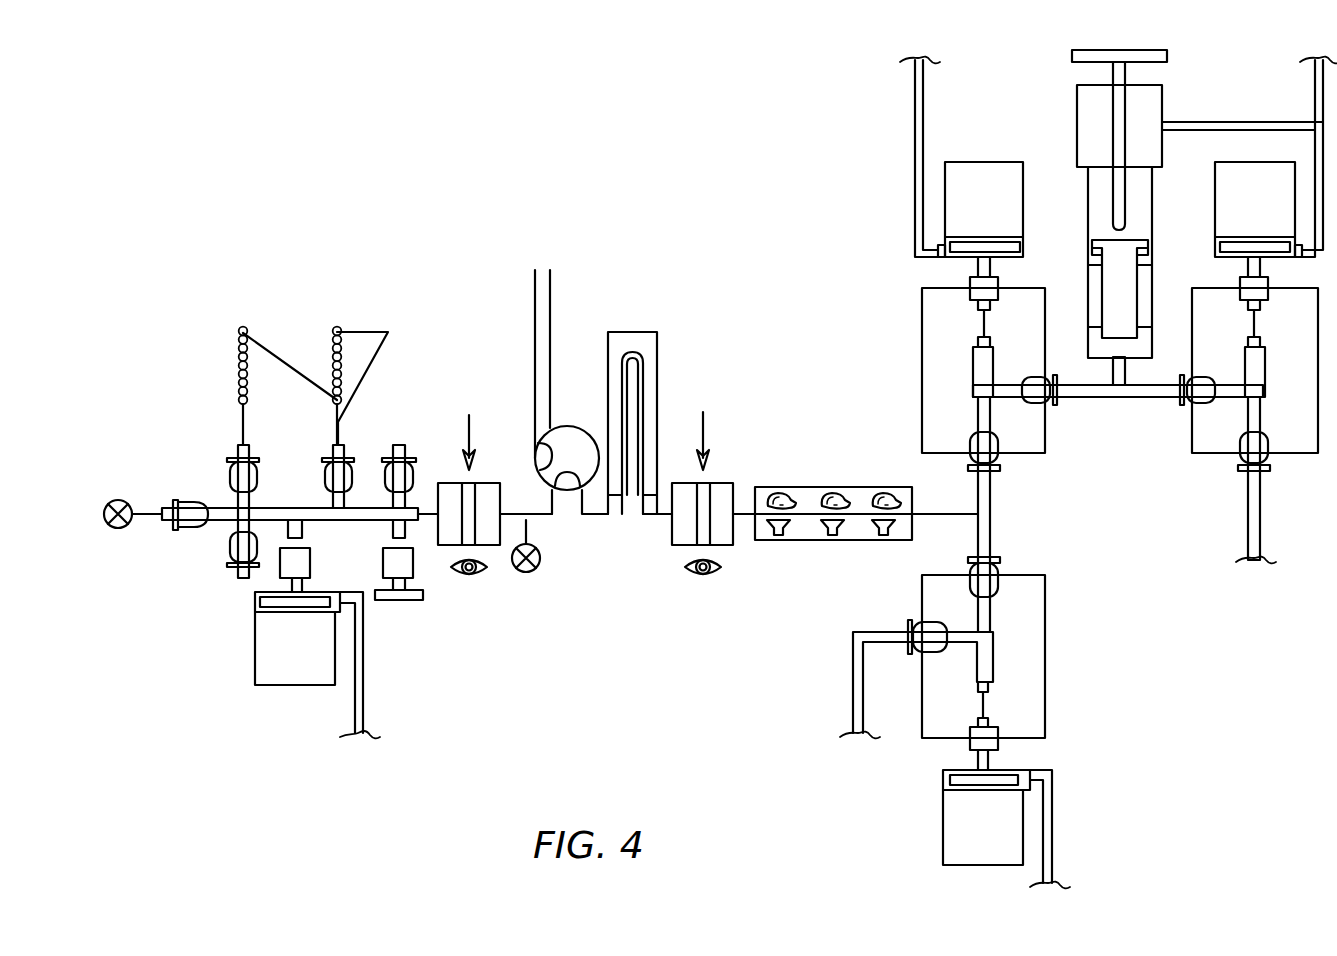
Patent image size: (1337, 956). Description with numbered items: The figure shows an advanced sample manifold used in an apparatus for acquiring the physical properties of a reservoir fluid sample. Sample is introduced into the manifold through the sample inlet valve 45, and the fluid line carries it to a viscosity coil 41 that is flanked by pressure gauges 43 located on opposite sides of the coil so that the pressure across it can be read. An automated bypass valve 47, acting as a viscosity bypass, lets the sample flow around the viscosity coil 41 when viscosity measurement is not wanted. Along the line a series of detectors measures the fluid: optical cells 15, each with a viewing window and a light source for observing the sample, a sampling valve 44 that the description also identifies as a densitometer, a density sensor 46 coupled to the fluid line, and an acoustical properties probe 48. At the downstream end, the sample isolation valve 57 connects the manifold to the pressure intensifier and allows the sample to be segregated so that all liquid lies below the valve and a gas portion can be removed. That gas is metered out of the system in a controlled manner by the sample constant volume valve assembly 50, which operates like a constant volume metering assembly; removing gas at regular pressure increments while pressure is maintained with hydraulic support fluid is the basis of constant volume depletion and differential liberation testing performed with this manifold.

The optical cell 15 is at (438, 585).
The viscosity coil 41 is at (364, 380).
The pressure gauges 43 is at (118, 499).
The sampling valve 44 is at (568, 426).
The sample inlet valve 45 is at (398, 602).
The density sensor 46 is at (632, 332).
The automated bypass valve 47 is at (295, 687).
The acoustical properties probe 48 is at (833, 487).
The sample constant volume valve assembly 50 is at (872, 133).
The sample isolation valve 57 is at (1047, 655).